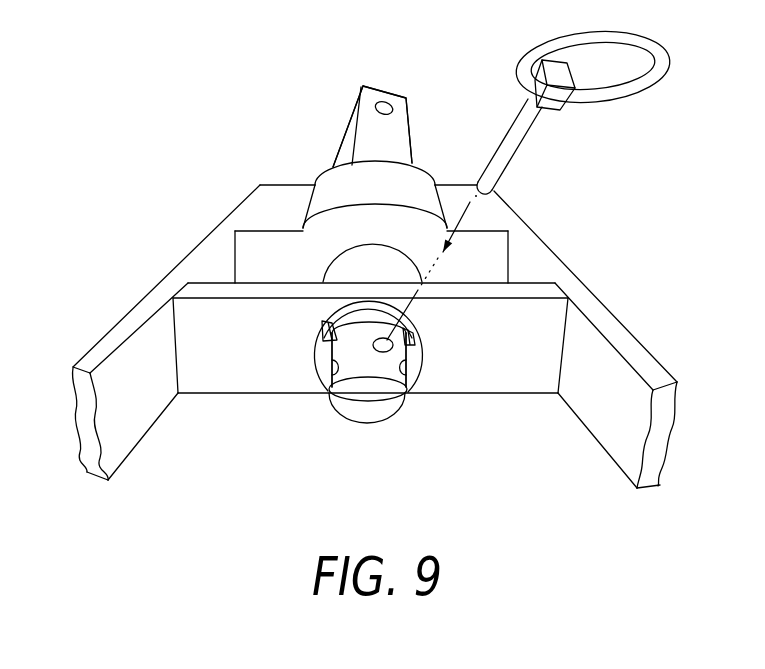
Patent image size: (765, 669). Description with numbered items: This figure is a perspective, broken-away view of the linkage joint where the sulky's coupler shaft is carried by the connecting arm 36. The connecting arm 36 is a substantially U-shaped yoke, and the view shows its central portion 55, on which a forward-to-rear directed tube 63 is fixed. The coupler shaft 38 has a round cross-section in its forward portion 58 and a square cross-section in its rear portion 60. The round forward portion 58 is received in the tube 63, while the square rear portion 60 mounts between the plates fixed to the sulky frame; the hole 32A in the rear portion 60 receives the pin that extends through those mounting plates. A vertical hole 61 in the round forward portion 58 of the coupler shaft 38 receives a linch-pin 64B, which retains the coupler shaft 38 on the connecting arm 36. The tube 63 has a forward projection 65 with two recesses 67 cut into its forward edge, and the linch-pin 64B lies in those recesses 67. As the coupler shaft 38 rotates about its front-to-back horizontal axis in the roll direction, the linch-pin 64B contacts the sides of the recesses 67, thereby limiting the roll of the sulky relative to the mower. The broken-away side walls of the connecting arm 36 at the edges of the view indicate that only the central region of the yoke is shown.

The hole 32A is at (383, 100).
The connecting arm 36 is at (127, 322).
The coupler shaft 38 is at (348, 103).
The central portion 55 is at (278, 137).
The forward portion 58 is at (382, 405).
The rear portion 60 is at (398, 137).
The vertical hole 61 is at (392, 341).
The tube 63 is at (350, 252).
The linch-pin 64B is at (524, 133).
The forward projection 65 is at (315, 368).
The recesses 67 is at (322, 321).